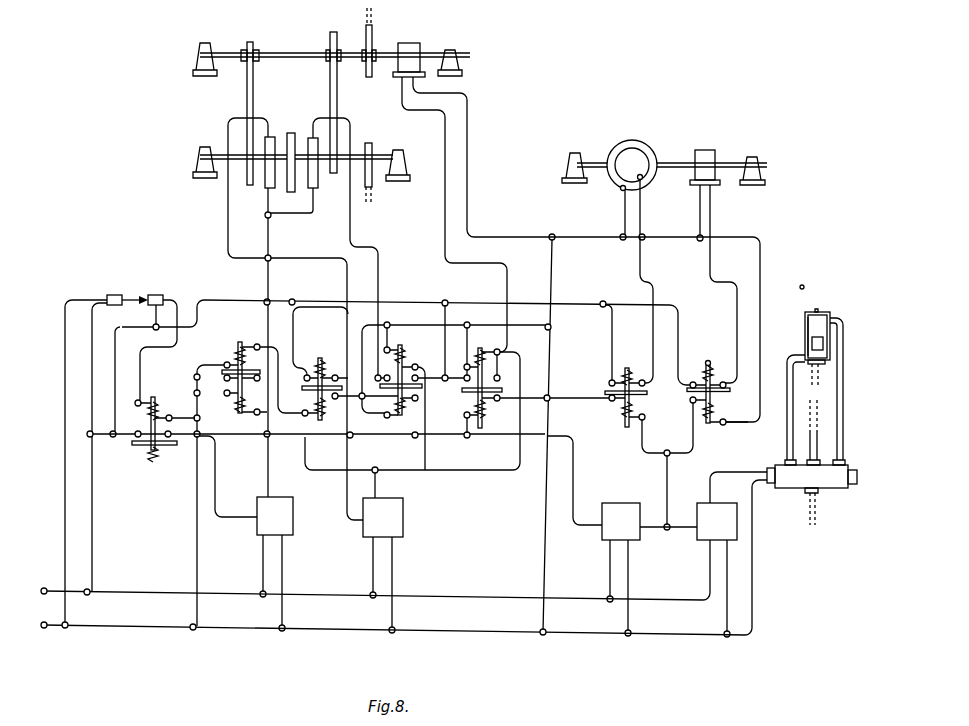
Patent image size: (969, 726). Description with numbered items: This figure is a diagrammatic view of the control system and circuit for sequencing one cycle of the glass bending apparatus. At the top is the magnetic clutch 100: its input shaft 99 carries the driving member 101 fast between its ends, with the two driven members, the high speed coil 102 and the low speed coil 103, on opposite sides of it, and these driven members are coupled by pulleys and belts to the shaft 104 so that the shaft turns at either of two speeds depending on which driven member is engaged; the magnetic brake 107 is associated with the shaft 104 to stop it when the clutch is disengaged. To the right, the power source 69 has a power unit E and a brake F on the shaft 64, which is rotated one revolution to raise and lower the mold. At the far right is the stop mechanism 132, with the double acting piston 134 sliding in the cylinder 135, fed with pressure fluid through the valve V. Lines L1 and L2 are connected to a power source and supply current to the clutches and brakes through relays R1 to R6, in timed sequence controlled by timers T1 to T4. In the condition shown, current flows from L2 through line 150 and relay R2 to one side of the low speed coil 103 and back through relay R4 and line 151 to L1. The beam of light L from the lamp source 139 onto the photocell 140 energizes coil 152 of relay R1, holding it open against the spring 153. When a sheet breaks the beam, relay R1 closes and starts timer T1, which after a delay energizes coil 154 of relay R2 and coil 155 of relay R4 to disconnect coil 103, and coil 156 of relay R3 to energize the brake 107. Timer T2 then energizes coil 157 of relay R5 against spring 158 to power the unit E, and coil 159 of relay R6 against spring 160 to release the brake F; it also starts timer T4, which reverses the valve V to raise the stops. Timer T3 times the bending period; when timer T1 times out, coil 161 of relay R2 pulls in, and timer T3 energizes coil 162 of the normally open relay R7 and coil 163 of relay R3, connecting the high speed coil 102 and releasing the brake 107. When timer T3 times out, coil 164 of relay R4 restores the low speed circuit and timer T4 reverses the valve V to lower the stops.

The input shaft 99 is at (221, 157).
The magnetic clutch 100 is at (288, 148).
The driving member 101 is at (290, 133).
The high speed coil 102 is at (270, 182).
The low speed coil 103 is at (313, 186).
The shaft 104 is at (290, 55).
The magnetic brake 107 is at (410, 57).
The power source 69 is at (664, 144).
The shaft 64 is at (733, 165).
The power unit E is at (624, 141).
The brake F is at (704, 162).
The beam of light L is at (139, 296).
The lamp source 139 is at (113, 295).
The photocell 140 is at (158, 295).
The line 150 is at (272, 243).
The line 151 is at (405, 300).
The coil 152 is at (159, 408).
The spring 153 is at (164, 455).
The coil 154 is at (237, 404).
The coil 155 is at (397, 406).
The coil 156 is at (483, 408).
The coil 157 is at (620, 404).
The spring 158 is at (627, 370).
The coil 159 is at (703, 423).
The spring 160 is at (705, 362).
The coil 161 is at (238, 356).
The coil 162 is at (324, 404).
The coil 163 is at (478, 358).
The coil 164 is at (405, 356).
The relay R1 is at (149, 437).
The relay R2 is at (253, 391).
The relay R3 is at (491, 383).
The relay R4 is at (402, 374).
The relay R5 is at (621, 417).
The relay R6 is at (721, 395).
The relay R7 is at (345, 368).
The timer T1 is at (275, 564).
The timer T2 is at (621, 569).
The timer T3 is at (383, 565).
The timer T4 is at (703, 554).
The valve V is at (812, 421).
The reciprocating mechanism 132 is at (806, 324).
The piston 134 is at (812, 345).
The cylinder 135 is at (805, 320).
The line L1 is at (134, 588).
The line L2 is at (130, 628).